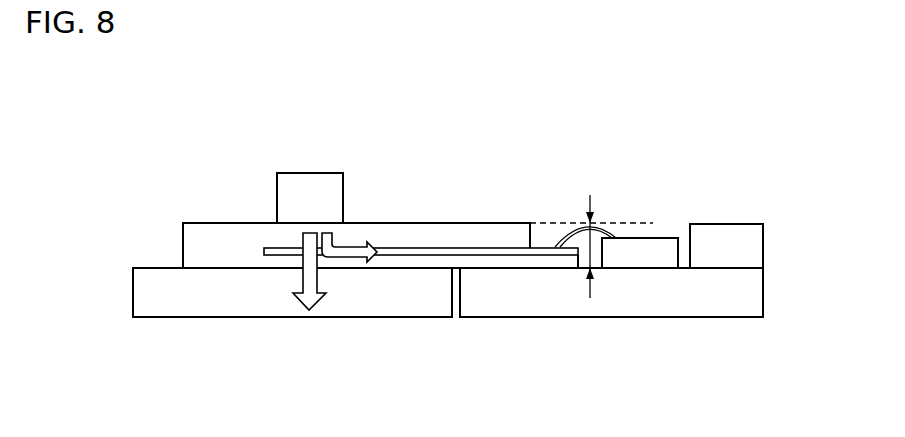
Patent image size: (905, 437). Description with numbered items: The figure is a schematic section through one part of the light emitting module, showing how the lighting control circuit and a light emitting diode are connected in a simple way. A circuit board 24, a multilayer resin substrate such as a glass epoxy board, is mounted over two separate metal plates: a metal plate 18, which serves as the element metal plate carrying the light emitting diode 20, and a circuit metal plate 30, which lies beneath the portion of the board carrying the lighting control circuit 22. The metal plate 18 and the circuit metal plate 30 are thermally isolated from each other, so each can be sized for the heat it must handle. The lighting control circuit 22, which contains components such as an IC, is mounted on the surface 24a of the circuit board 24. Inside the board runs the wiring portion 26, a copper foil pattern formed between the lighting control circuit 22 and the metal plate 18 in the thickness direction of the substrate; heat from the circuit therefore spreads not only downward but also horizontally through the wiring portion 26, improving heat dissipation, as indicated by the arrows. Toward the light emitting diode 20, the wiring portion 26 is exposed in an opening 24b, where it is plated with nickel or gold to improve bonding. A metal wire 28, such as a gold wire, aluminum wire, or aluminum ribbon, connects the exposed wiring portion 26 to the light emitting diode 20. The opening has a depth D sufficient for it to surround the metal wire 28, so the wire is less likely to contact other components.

The metal plate 18 is at (763, 292).
The light emitting diode 20 is at (665, 237).
The lighting control circuit 22 is at (329, 163).
The circuit board 24 is at (183, 248).
The surface of circuit board 24a is at (218, 223).
The opening 24b is at (623, 208).
The wiring portion 26 is at (459, 250).
The metal wire 28 is at (573, 228).
The circuit metal plate 30 is at (235, 317).
The depth D is at (594, 255).